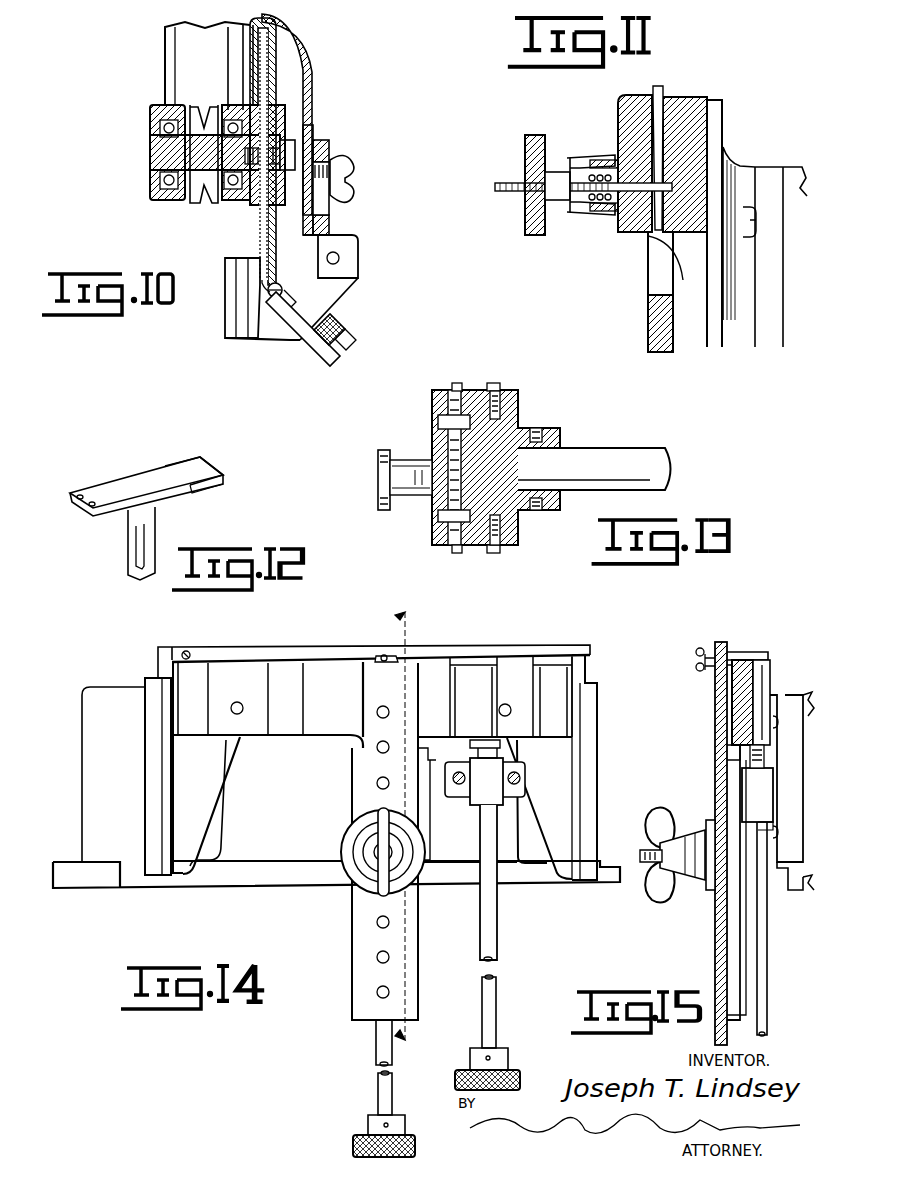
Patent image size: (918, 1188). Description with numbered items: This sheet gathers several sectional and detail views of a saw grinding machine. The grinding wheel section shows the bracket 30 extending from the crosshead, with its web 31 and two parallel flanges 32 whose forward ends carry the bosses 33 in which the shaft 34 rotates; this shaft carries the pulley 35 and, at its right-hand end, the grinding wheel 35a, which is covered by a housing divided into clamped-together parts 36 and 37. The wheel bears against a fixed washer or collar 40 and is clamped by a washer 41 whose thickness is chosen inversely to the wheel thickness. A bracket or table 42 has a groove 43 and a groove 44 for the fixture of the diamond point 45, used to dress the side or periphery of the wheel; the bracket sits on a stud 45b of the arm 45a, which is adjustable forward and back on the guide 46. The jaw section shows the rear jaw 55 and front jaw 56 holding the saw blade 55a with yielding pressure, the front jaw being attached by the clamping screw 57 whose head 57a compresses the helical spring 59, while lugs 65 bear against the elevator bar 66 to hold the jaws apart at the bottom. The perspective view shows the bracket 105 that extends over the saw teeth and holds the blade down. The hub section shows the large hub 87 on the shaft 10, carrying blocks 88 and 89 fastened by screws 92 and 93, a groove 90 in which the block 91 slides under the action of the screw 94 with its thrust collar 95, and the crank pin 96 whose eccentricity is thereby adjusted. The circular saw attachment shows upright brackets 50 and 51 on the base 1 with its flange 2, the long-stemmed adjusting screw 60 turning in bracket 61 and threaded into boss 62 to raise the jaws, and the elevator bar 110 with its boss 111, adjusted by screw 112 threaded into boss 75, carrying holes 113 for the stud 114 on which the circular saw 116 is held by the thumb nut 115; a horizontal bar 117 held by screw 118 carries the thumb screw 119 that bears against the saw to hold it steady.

In FIG. 11, the base 1 is at (793, 172).
In FIG. 14, the base 1 is at (94, 788).
In FIG. 15, the base 1 is at (800, 880).
In FIG. 14, the flange 2 is at (78, 868).
In FIG. 13, the shaft 10 is at (600, 460).
In FIG. 10, the bracket 30 is at (170, 40).
In FIG. 10, the web 31 is at (190, 72).
In FIG. 10, the flanges 32 is at (237, 37).
In FIG. 10, the bosses 33 is at (160, 108).
In FIG. 10, the shaft 34 is at (175, 157).
In FIG. 10, the pulley 35 is at (203, 200).
In FIG. 10, the grinding wheel 35a is at (265, 262).
In FIG. 10, the housing part 36 is at (256, 22).
In FIG. 10, the housing part 37 is at (292, 38).
In FIG. 10, the fixed washer or collar 40 is at (262, 208).
In FIG. 10, the washer 41 is at (278, 205).
In FIG. 10, the bracket or table 42 is at (246, 344).
In FIG. 10, the groove 43 is at (236, 310).
In FIG. 10, the groove 44 is at (282, 346).
In FIG. 10, the diamond point 45 is at (270, 283).
In FIG. 10, the arm 45a is at (352, 256).
In FIG. 10, the stud 45b is at (340, 262).
In FIG. 10, the guide 46 is at (330, 128).
In FIG. 14, the upright bracket 50 is at (588, 748).
In FIG. 11, the upright bracket 51 is at (742, 170).
In FIG. 14, the upright bracket 51 is at (158, 748).
In FIG. 15, the upright bracket 51 is at (786, 700).
In FIG. 11, the rear jaw 55 is at (686, 100).
In FIG. 14, the rear jaw 55 is at (432, 660).
In FIG. 15, the rear jaw 55 is at (744, 660).
In FIG. 11, the saw blade 55a is at (660, 88).
In FIG. 11, the front jaw 56 is at (620, 118).
In FIG. 11, the clamping screw 57 is at (498, 190).
In FIG. 11, the screw head 57a is at (527, 228).
In FIG. 11, the helical spring 59 is at (598, 210).
In FIG. 14, the adjusting screw 60 is at (508, 1066).
In FIG. 14, the bracket 61 is at (482, 780).
In FIG. 14, the boss 62 is at (472, 744).
In FIG. 11, the lugs 65 is at (645, 232).
In FIG. 11, the elevator bar 66 is at (648, 329).
In FIG. 15, the boss 75 is at (770, 660).
In FIG. 13, the hub 87 is at (525, 425).
In FIG. 13, the block 88 is at (468, 390).
In FIG. 13, the block 89 is at (470, 547).
In FIG. 13, the groove 90 is at (438, 421).
In FIG. 13, the block 91 is at (432, 440).
In FIG. 13, the screw 92 is at (500, 388).
In FIG. 13, the screw 93 is at (500, 548).
In FIG. 13, the screw 94 is at (445, 518).
In FIG. 13, the collar 95 is at (436, 407).
In FIG. 13, the crank pin 96 is at (400, 480).
In FIG. 12, the bracket 105 is at (128, 486).
In FIG. 14, the elevator bar 110 is at (405, 933).
In FIG. 15, the elevator bar 110 is at (728, 935).
In FIG. 15, the boss 111 is at (750, 790).
In FIG. 14, the screw 112 is at (380, 1087).
In FIG. 14, the holes 113 is at (376, 783).
In FIG. 15, the stud 114 is at (648, 866).
In FIG. 15, the thumb nut 115 is at (658, 820).
In FIG. 15, the circular saw 116 is at (715, 708).
In FIG. 14, the horizontal bar 117 is at (318, 655).
In FIG. 15, the horizontal bar 117 is at (710, 652).
In FIG. 14, the screw 118 is at (183, 650).
In FIG. 14, the thumb screw 119 is at (378, 652).
In FIG. 15, the thumb screw 119 is at (696, 652).